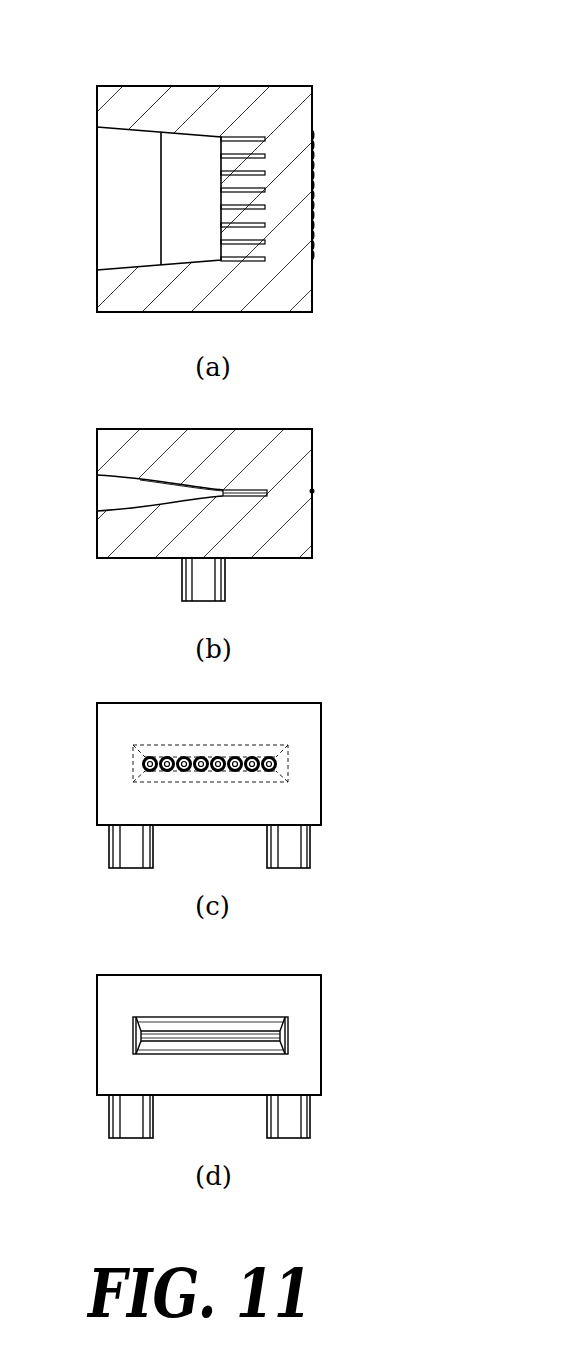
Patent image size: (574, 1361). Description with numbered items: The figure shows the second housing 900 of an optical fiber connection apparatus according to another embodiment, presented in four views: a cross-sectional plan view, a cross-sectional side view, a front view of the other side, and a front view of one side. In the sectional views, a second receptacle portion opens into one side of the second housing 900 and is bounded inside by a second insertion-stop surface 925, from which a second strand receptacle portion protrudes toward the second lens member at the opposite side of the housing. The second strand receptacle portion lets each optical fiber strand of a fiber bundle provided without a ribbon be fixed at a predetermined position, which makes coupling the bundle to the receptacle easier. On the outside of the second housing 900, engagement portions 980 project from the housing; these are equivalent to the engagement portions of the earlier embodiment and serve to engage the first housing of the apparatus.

The second housing 900 is at (164, 72).
The second insertion-stop surface 925 is at (208, 487).
The engagement portions 980 is at (212, 575).